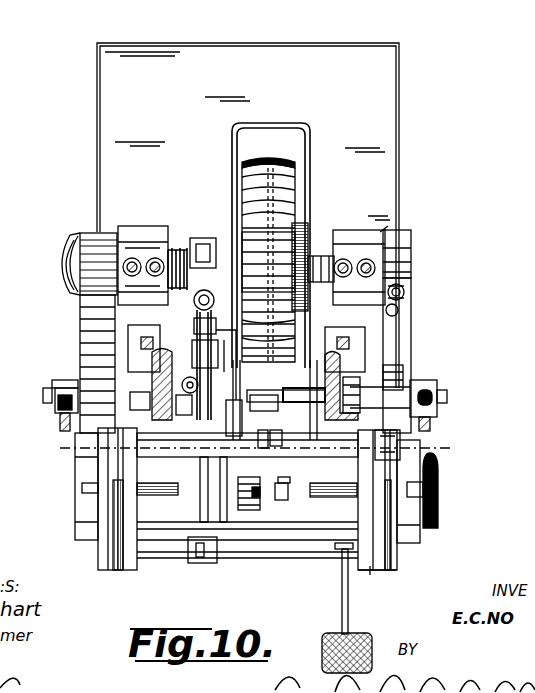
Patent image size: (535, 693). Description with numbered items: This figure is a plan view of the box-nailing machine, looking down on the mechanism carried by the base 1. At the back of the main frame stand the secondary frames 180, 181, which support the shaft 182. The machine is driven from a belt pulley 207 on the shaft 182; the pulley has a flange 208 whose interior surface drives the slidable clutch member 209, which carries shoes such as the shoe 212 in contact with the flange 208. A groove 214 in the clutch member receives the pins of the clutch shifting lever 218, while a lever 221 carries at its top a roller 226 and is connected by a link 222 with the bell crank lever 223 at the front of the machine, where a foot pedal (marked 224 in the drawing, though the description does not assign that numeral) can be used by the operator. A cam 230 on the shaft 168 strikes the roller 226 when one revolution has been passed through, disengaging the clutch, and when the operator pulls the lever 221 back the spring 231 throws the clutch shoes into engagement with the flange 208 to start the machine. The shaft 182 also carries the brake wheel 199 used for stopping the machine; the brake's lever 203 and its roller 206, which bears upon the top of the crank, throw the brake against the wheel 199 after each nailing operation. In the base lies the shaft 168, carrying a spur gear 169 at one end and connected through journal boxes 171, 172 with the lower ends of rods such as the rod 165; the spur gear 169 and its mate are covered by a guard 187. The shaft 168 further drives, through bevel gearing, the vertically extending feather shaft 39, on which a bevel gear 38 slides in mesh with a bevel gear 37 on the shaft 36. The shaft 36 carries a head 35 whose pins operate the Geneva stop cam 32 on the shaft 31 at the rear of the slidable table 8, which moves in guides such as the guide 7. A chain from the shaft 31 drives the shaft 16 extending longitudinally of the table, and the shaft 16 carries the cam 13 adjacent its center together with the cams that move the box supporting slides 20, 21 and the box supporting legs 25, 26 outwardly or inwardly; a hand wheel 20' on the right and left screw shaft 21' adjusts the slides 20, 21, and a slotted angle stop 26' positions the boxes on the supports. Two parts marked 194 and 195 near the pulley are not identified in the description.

The base 1 is at (385, 133).
The guard 187 is at (82, 347).
The secondary frame 180 is at (138, 238).
The spring 231 is at (185, 226).
The groove 214 is at (190, 230).
The slidable clutch member 209 is at (206, 230).
The flange 208 is at (232, 228).
The clutch shoe 212 is at (195, 300).
The lever 221 is at (200, 318).
The cam 230 is at (160, 348).
The belt pulley 207 is at (287, 181).
The clutch shifting lever 218 is at (268, 263).
The roller 226 is at (275, 287).
The shaft 195 is at (323, 282).
The box 194 is at (337, 341).
The shaft 182 is at (326, 240).
The secondary frame 181 is at (382, 235).
The wheel 199 is at (400, 262).
The lever 203 is at (405, 340).
The roller 206 is at (405, 380).
The bevel gear 38 is at (164, 385).
The vertically extending shaft 39 is at (187, 405).
The shaft 36 is at (328, 391).
The Geneva stop cam 32 is at (270, 412).
The slidable table 8 is at (340, 415).
The head 35 is at (222, 436).
The shaft 31 is at (268, 443).
The shaft 168 is at (299, 440).
The journal box 171 is at (56, 410).
The spur gear 169 is at (62, 428).
The box supporting leg 25 is at (96, 440).
The box supporting slide 21 is at (247, 518).
The guide 7 is at (143, 417).
The bevel gear 37 is at (197, 417).
The link 222 is at (203, 512).
The cam 13 is at (282, 513).
The shaft 16 is at (284, 483).
The right and left screw shaft 21' is at (333, 502).
The box supporting leg 26 is at (399, 500).
The slotted angle stop 26' is at (421, 447).
The hand wheel 20' is at (441, 490).
The box supporting slide 20 is at (392, 578).
The bell crank lever 223 is at (210, 560).
The pedal 224 is at (350, 632).
The journal box 172 is at (434, 398).
The rod 165 is at (432, 420).